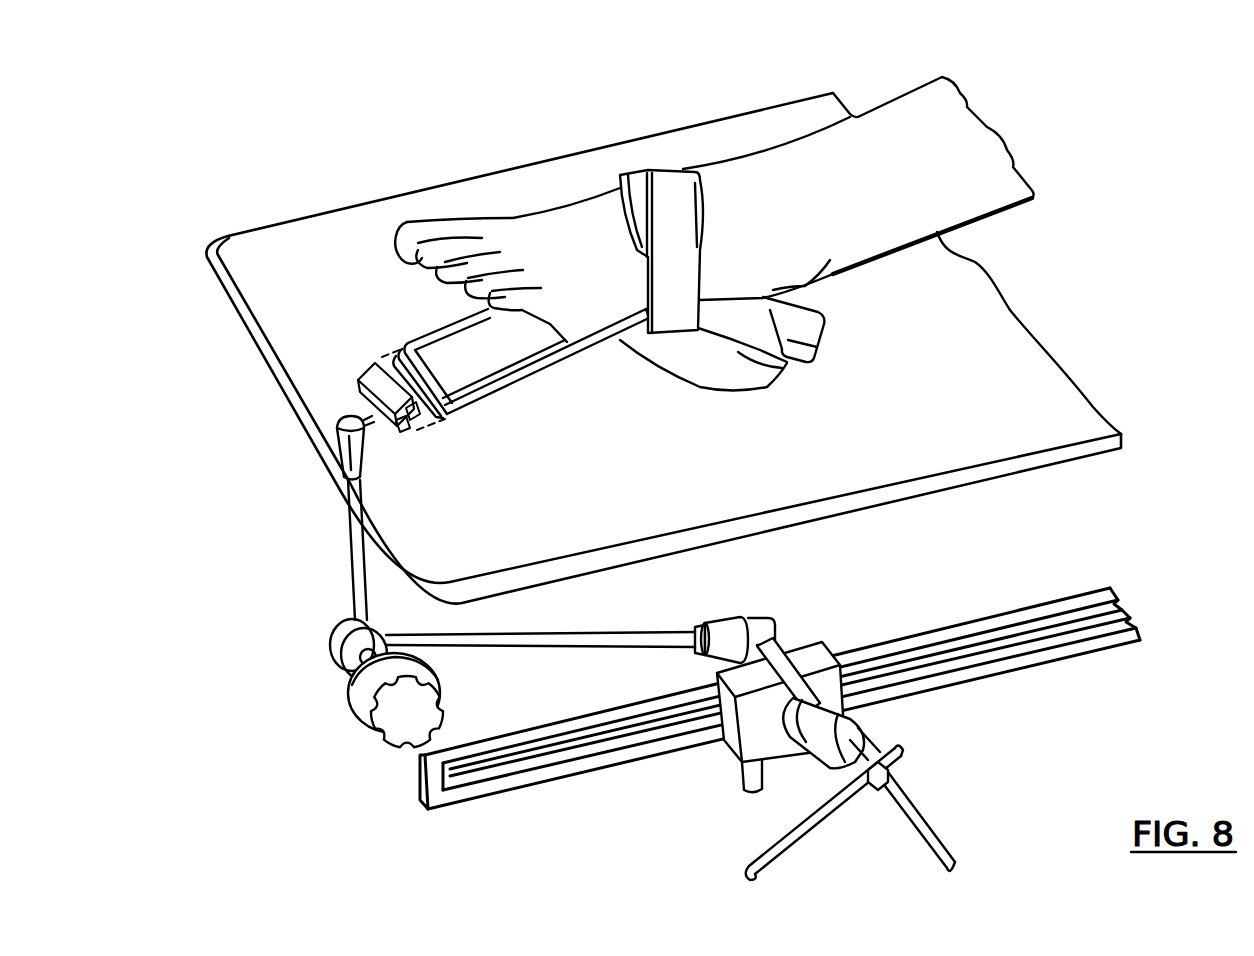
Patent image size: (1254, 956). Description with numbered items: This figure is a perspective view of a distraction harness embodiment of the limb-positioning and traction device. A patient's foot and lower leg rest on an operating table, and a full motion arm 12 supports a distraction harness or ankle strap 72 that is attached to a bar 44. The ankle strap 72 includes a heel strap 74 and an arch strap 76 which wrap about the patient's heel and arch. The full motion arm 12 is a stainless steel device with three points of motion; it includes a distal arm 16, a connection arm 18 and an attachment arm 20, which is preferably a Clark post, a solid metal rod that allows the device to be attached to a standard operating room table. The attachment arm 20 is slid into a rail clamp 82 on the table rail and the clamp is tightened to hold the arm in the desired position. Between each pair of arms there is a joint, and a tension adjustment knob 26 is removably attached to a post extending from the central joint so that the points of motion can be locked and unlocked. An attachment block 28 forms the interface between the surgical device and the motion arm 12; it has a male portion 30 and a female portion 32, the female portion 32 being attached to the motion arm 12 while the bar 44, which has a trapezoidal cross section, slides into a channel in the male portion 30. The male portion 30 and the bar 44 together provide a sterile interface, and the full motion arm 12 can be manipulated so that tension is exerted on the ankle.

The full motion arm 12 is at (325, 609).
The distal arm 16 is at (352, 562).
The connection arm 18 is at (615, 636).
The attachment arm 20 is at (935, 845).
The tension adjustment knob 26 is at (375, 743).
The attachment block 28 is at (362, 378).
The male portion 30 is at (416, 420).
The female portion 32 is at (400, 432).
The bar 44 is at (398, 343).
The ankle strap 72 is at (430, 330).
The heel strap 74 is at (790, 340).
The arch strap 76 is at (655, 187).
The rail clamp 82 is at (750, 743).